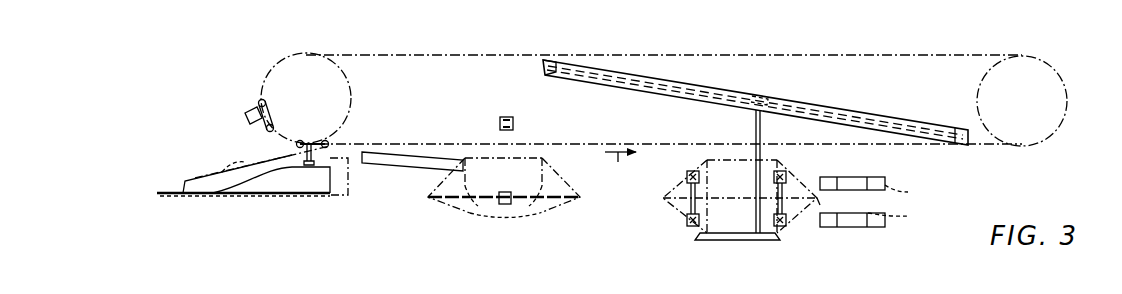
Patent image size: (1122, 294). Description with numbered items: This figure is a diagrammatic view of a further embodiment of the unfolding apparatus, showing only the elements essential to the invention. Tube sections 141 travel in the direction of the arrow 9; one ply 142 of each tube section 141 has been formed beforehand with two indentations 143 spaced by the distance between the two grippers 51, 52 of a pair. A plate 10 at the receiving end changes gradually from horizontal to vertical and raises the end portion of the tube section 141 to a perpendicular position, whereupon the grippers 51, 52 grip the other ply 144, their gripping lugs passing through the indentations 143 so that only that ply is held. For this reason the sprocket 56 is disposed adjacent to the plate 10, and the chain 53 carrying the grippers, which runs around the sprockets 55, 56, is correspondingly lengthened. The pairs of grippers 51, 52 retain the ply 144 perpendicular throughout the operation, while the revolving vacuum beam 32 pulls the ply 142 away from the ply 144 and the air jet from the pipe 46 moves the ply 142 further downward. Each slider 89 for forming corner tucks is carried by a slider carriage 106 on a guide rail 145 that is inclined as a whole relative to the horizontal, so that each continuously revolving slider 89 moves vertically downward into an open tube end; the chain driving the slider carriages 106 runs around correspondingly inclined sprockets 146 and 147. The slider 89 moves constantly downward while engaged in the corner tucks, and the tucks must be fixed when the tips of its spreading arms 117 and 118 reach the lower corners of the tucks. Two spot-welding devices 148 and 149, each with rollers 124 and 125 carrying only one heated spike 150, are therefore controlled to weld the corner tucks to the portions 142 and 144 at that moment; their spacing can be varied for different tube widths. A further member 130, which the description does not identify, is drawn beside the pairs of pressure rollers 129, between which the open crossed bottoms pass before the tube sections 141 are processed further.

The arrow 9 is at (620, 168).
The plate 10 is at (296, 189).
The vacuum beam 32 is at (402, 166).
The pipe 46 is at (516, 124).
The gripper 51 is at (254, 112).
The gripper 52 is at (298, 145).
The chain 53 is at (661, 84).
The sprocket 55 is at (1059, 85).
The sprocket 56 is at (284, 72).
The slider for forming corner tucks 89 is at (755, 124).
The slider carriage 106 is at (768, 103).
The spreading arm 117 is at (736, 243).
The spreading arm 118 is at (776, 242).
The roller 124 is at (689, 173).
The roller 125 is at (698, 233).
The pressure rollers 129 is at (903, 202).
The slide bar 130 is at (880, 179).
The tube section 141 is at (207, 165).
The ply 142 is at (218, 191).
The indentations 143 is at (232, 168).
The ply 144 is at (196, 178).
The guide rail 145 is at (853, 113).
The sprocket 146 is at (573, 65).
The sprocket 147 is at (942, 132).
The spot-welding device 148 is at (688, 204).
The spot-welding device 149 is at (826, 212).
The heated spike 150 is at (690, 222).